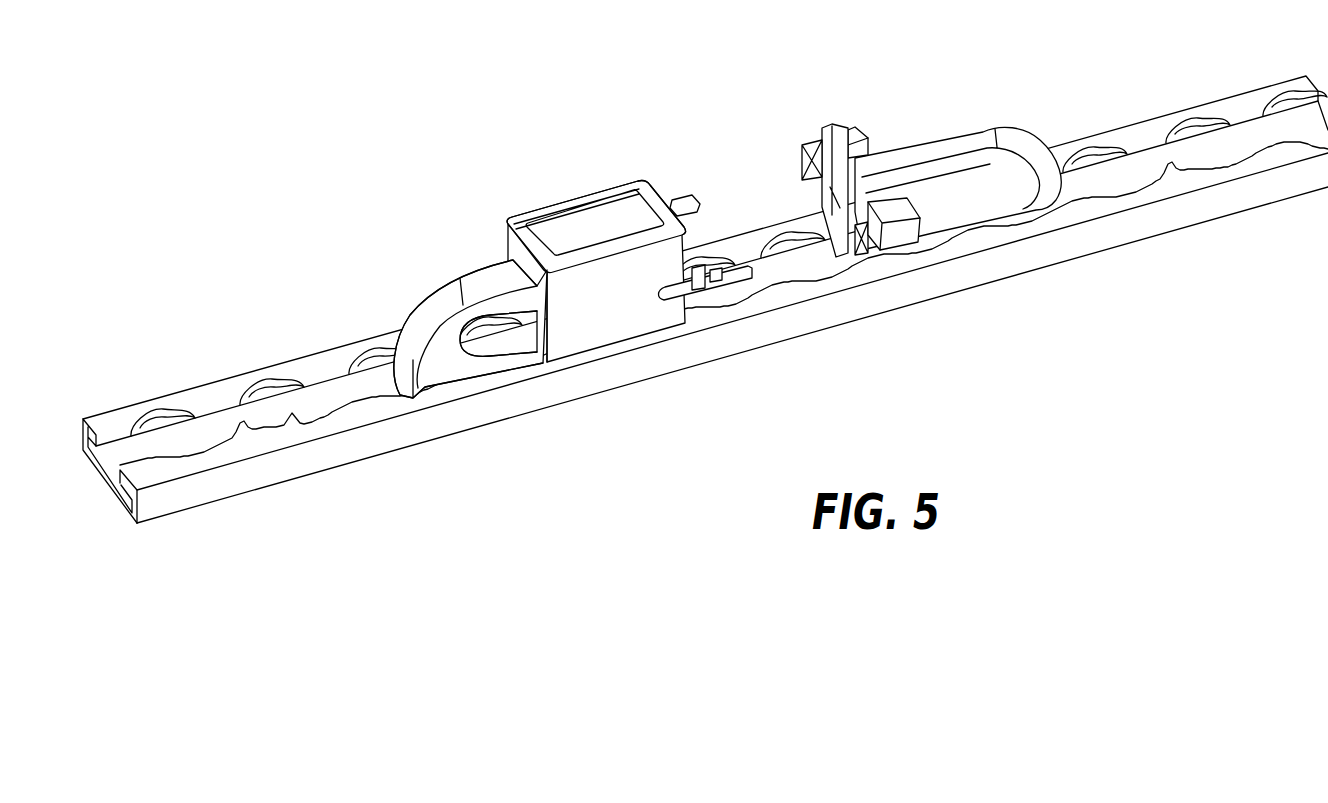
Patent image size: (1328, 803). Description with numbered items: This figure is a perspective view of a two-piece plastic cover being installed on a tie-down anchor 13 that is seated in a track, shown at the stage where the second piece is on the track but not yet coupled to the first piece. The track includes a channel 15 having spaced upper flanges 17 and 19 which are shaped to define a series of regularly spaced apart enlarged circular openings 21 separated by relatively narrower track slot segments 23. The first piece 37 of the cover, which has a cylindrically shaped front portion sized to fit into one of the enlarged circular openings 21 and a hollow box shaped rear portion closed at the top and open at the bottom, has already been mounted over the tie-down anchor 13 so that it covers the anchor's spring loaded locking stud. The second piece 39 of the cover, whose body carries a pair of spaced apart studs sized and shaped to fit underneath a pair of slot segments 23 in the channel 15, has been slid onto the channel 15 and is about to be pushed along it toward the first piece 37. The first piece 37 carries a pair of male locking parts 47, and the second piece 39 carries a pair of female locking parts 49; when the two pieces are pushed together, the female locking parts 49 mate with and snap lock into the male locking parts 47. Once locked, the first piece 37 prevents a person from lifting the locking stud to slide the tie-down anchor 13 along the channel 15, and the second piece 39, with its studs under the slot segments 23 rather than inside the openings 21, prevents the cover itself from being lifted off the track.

The tie-down anchor 13 is at (437, 287).
The channel 15 is at (113, 467).
The upper flange 17 is at (112, 490).
The upper flange 19 is at (84, 441).
The enlarged circular openings 21 is at (157, 423).
The track slot segments 23 is at (330, 378).
The first piece 37 is at (592, 191).
The second piece 39 is at (949, 132).
The male locking parts 47 is at (733, 268).
The female locking parts 49 is at (857, 228).